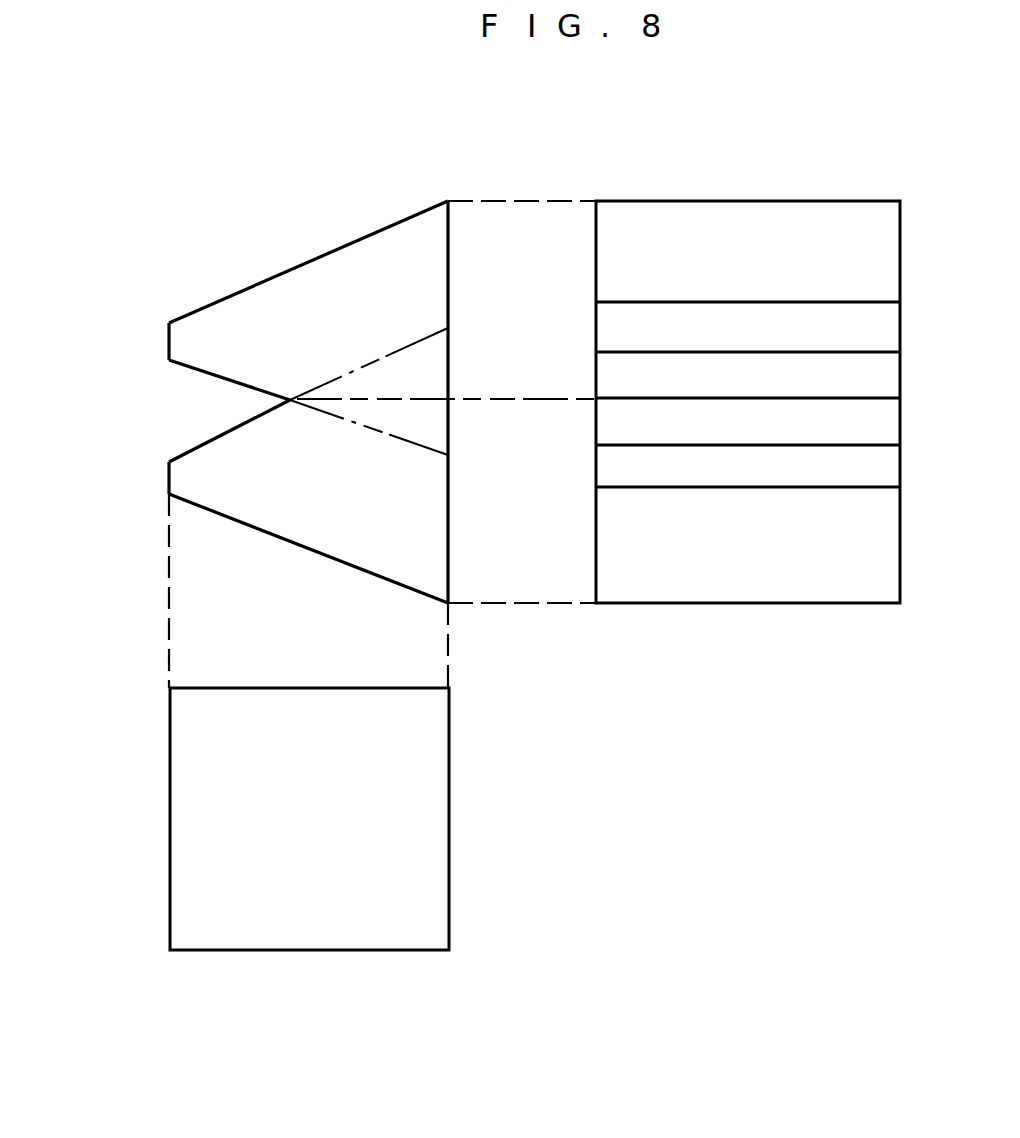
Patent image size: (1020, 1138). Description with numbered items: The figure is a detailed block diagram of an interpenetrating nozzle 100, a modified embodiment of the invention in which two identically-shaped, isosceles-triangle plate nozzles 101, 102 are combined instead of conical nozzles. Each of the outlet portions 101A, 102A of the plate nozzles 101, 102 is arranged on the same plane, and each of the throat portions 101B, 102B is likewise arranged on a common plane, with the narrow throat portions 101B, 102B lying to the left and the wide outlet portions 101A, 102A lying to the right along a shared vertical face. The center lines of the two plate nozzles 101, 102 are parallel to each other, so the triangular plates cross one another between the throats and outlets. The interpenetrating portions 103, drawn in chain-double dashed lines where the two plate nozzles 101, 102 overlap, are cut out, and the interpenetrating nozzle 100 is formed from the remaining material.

The interpenetrating nozzle 100 is at (218, 179).
The plate nozzle 101 is at (233, 294).
The outlet portion 101A is at (448, 253).
The throat portion 101B is at (169, 338).
The plate nozzle 102 is at (228, 518).
The outlet portion 102A is at (450, 540).
The throat portion 102B is at (169, 472).
The interpenetrating portion 103 is at (412, 344).